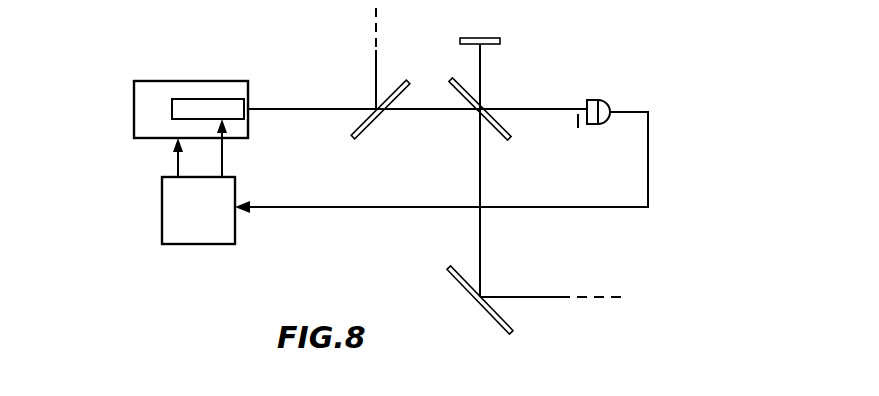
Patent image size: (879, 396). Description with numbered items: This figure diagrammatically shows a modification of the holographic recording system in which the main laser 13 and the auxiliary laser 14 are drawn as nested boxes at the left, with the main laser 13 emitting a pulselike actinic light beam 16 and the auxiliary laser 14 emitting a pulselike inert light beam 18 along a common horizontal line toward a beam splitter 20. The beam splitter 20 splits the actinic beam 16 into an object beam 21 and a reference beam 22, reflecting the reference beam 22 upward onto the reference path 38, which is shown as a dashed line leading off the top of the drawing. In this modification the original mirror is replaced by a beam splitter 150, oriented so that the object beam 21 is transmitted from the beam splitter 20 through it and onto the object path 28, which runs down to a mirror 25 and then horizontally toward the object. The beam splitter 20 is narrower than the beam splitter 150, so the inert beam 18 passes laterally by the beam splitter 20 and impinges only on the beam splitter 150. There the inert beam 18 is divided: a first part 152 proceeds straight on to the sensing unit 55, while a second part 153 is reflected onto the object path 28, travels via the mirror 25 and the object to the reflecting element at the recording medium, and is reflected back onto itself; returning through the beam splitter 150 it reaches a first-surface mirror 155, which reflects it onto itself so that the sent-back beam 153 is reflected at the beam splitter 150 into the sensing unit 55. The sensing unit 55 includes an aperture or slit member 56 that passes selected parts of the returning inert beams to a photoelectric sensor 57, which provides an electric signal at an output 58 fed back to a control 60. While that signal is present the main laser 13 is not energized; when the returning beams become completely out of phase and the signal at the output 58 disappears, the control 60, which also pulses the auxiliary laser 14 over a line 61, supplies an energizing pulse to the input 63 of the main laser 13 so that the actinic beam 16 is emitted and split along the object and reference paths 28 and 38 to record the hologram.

The main laser 13 is at (153, 81).
The auxiliary laser 14 is at (212, 61).
The actinic light beam 16 is at (292, 106).
The inert light beam 18 is at (333, 110).
The beam splitter 20 is at (365, 133).
The object beam 21 is at (481, 240).
The reference beam 22 is at (376, 72).
The mirror 25 is at (452, 266).
The object path 28 is at (524, 291).
The reference path 38 is at (370, 43).
The sensing unit 55 is at (612, 92).
The aperture or slit member 56 is at (577, 104).
The photoelectric sensor 57 is at (600, 125).
The output 58 is at (406, 206).
The control 60 is at (235, 240).
The control signal line 61 is at (222, 157).
The input 63 is at (178, 160).
The beam splitter 150 is at (508, 136).
The first part of inert beam 152 is at (530, 92).
The second part of inert beam 153 is at (481, 178).
The first-surface mirror 155 is at (483, 37).